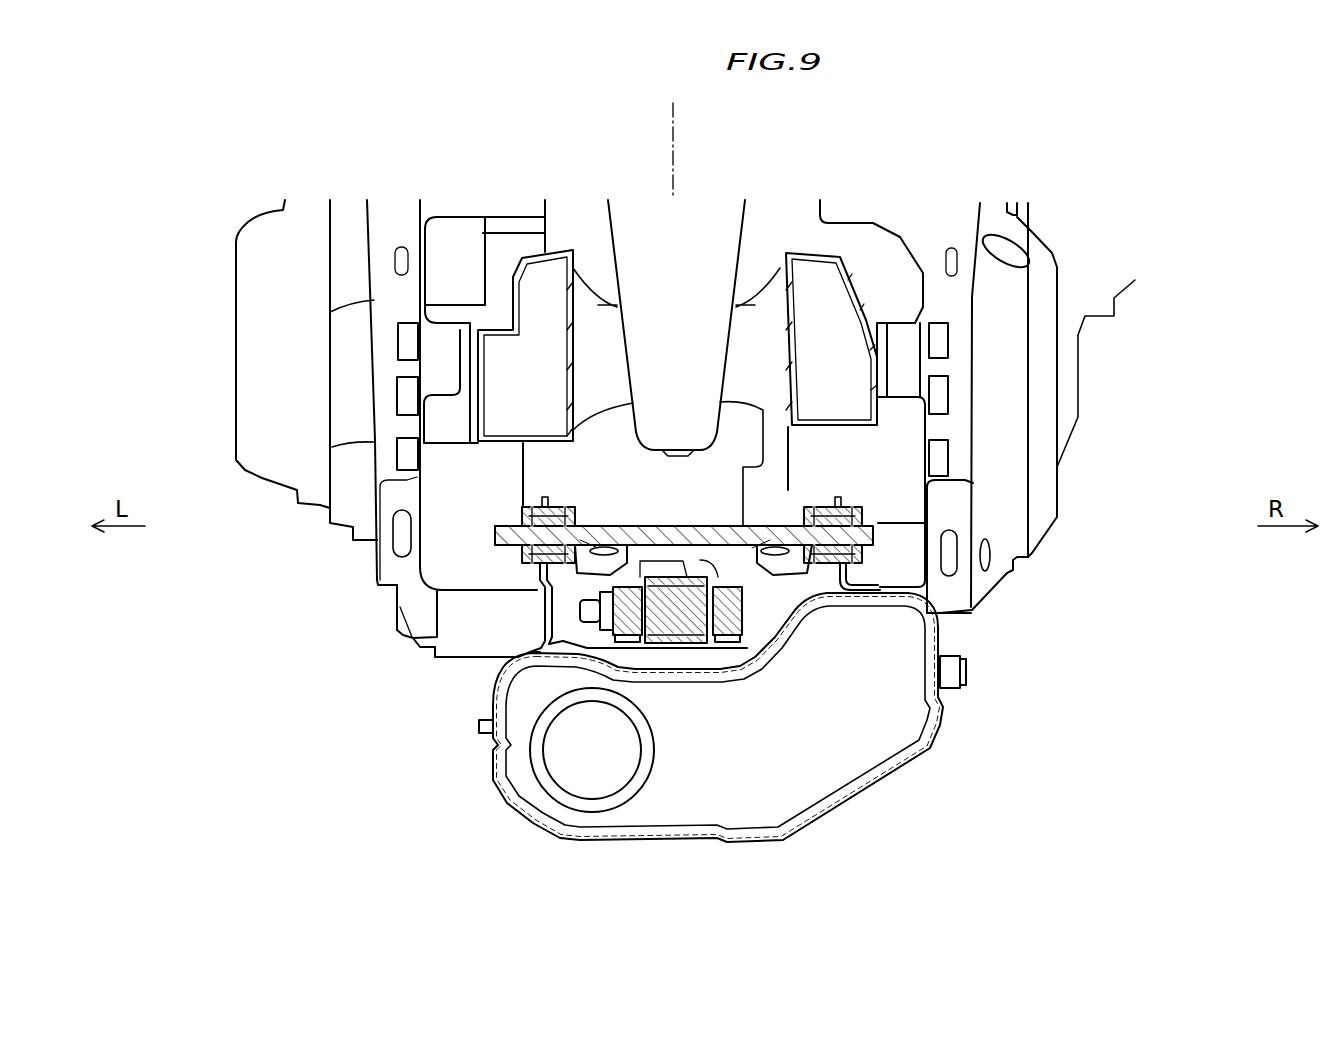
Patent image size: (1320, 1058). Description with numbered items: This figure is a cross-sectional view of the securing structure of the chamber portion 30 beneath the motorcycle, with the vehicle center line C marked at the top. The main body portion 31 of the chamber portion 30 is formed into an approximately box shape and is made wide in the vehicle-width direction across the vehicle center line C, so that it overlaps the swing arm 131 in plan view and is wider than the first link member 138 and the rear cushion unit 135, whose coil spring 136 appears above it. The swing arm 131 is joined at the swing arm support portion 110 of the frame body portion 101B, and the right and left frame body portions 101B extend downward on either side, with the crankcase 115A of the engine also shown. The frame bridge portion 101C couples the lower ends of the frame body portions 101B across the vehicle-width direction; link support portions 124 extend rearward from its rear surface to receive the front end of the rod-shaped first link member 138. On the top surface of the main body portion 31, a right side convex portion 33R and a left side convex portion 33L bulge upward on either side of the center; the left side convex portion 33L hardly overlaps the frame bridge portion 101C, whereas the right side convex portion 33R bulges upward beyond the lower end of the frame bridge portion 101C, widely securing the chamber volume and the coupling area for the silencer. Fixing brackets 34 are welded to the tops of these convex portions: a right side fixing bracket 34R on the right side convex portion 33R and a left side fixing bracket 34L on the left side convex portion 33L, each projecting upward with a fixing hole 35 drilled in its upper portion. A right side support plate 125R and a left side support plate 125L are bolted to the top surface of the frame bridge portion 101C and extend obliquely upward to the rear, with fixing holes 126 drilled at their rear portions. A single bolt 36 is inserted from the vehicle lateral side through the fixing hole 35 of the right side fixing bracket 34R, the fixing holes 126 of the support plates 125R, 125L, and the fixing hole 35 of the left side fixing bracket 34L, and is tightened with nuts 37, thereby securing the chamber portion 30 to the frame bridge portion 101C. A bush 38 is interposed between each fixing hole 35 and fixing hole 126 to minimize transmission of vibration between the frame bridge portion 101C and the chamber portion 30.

The vehicle center line C is at (673, 172).
The chamber portion 30 is at (745, 744).
The main body portion 31 is at (932, 752).
The left side convex portion 33L is at (535, 640).
The right side convex portion 33R is at (930, 590).
The fixing bracket 34 is at (691, 502).
The left side fixing bracket 34L is at (520, 562).
The right side fixing bracket 34R is at (870, 545).
The fixing hole 35 is at (563, 512).
The bolt 36 is at (672, 534).
The nut 37 is at (480, 552).
The bush 38 is at (583, 520).
The frame body portion 101B is at (393, 527).
The frame bridge portion 101C is at (472, 628).
The swing arm support portion 110 is at (447, 397).
The crankcase 115A is at (1118, 409).
The link support portion 124 is at (610, 662).
The left side support plate 125L is at (547, 623).
The right side support plate 125R is at (775, 620).
The fixing hole 126 is at (585, 542).
The swing arm 131 is at (522, 258).
The rear cushion unit 135 is at (673, 321).
The coil spring 136 is at (620, 237).
The first link member 138 is at (680, 640).